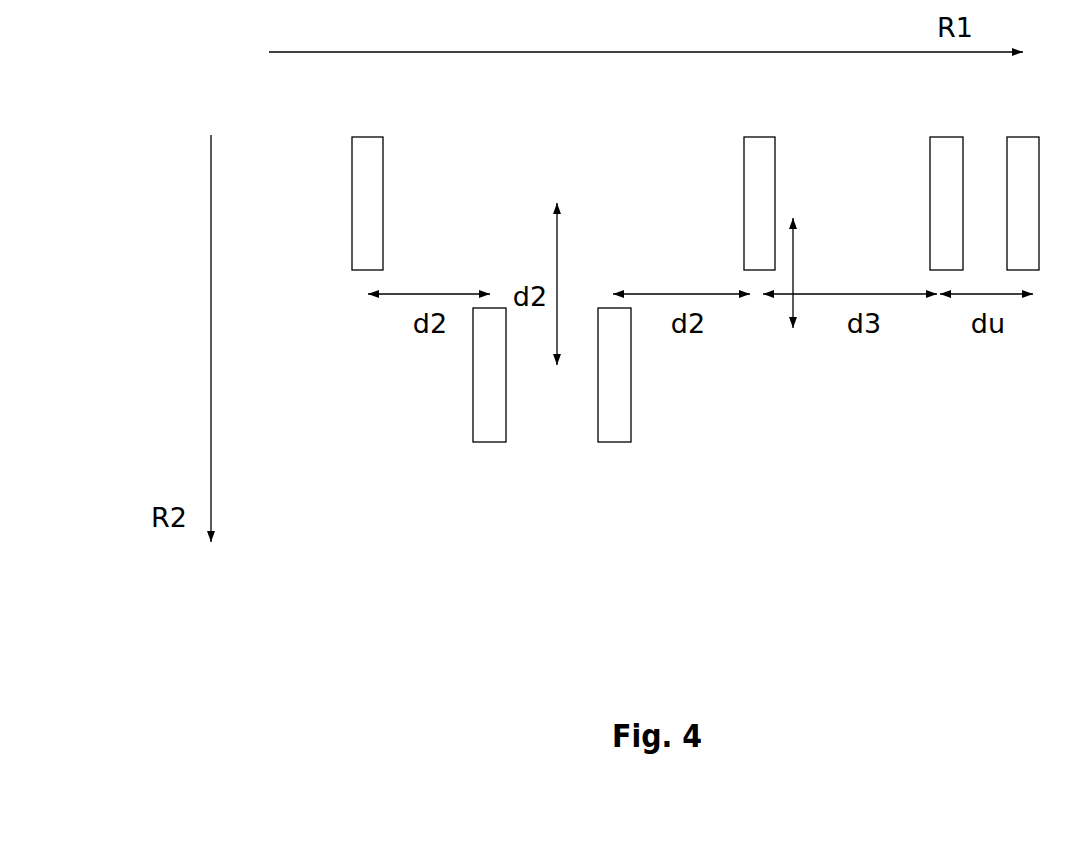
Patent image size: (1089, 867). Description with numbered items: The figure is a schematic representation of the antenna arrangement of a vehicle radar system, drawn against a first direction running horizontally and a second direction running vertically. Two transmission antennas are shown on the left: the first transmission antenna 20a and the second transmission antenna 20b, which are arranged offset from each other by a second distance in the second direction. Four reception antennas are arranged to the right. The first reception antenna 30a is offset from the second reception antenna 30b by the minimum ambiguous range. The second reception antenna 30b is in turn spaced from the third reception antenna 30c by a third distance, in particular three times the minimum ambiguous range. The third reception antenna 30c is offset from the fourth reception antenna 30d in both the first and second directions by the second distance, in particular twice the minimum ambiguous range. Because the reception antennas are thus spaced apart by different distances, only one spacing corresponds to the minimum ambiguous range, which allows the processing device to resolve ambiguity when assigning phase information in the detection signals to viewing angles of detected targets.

The first transmission antenna 20a is at (367, 185).
The second transmission antenna 20b is at (495, 400).
The first reception antenna 30a is at (1028, 184).
The second reception antenna 30b is at (946, 184).
The third reception antenna 30c is at (758, 185).
The fourth reception antenna 30d is at (615, 400).